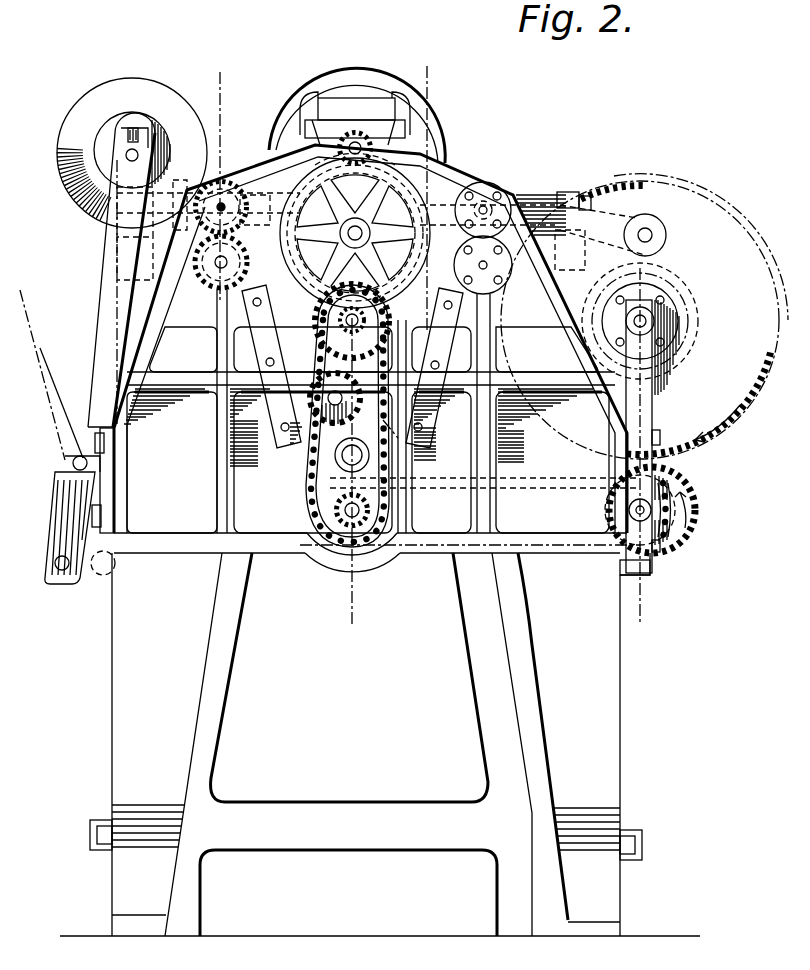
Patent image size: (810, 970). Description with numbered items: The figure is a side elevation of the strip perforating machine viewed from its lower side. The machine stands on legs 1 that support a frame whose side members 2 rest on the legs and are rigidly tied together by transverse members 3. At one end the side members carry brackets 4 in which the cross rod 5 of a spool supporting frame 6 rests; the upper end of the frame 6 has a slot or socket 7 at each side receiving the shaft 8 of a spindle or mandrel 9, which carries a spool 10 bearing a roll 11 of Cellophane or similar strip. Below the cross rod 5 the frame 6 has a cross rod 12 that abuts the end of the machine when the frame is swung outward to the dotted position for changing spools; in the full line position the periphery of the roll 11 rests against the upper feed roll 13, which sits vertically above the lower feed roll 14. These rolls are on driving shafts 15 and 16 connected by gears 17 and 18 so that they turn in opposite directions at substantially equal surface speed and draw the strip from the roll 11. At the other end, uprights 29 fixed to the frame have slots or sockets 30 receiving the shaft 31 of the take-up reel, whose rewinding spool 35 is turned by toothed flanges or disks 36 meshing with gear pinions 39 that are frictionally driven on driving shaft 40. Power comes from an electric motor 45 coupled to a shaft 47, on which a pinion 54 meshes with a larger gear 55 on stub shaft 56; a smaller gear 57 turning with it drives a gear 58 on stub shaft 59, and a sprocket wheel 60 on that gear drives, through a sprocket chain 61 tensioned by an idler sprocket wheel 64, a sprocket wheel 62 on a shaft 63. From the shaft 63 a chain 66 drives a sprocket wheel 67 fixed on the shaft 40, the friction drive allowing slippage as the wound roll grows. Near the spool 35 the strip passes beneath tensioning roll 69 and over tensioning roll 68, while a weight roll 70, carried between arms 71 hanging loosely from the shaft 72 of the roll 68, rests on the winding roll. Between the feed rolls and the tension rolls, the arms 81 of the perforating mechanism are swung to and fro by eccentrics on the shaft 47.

The legs 1 is at (222, 688).
The side members 2 is at (258, 540).
The transverse members 3 is at (412, 66).
The brackets 4 is at (108, 472).
The cross rod 5 is at (72, 466).
The spool supporting frame 6 is at (100, 292).
The slot or socket 7 is at (134, 125).
The shaft 8 is at (128, 148).
The spindle or mandrel 9 is at (125, 155).
The spool 10 is at (165, 130).
The roll 11 is at (150, 82).
The cross rod 12 is at (62, 570).
The upper feed roll 13 is at (230, 172).
The lower feed roll 14 is at (200, 283).
The driving shaft 15 is at (250, 205).
The driving shaft 16 is at (226, 266).
The gear 17 is at (220, 200).
The gear 18 is at (200, 253).
The uprights 29 is at (655, 413).
The slots or sockets 30 is at (660, 305).
The shaft 31 is at (655, 318).
The rewinding spool 35 is at (700, 340).
The flanges or disks 36 is at (745, 410).
The gear pinions 39 is at (698, 497).
The driving shaft 40 is at (622, 555).
The electric motor 45 is at (365, 66).
The shaft 47 is at (372, 145).
The pinion 54 is at (400, 165).
The gear 55 is at (420, 200).
The stub shaft 56 is at (340, 235).
The gear 57 is at (330, 265).
The gear 58 is at (330, 312).
The stub shaft 59 is at (340, 318).
The sprocket wheel 60 is at (345, 360).
The sprocket chain 61 is at (335, 458).
The sprocket wheel 62 is at (335, 505).
The shaft 63 is at (370, 502).
The idler sprocket wheel 64 is at (280, 425).
The chain 66 is at (535, 488).
The sprocket wheel 67 is at (628, 510).
The tensioning roll 68 is at (490, 205).
The tensioning roll 69 is at (505, 290).
The weight roll 70 is at (668, 220).
The arms 71 is at (620, 195).
The shaft 72 is at (470, 215).
The arms 81 is at (390, 452).